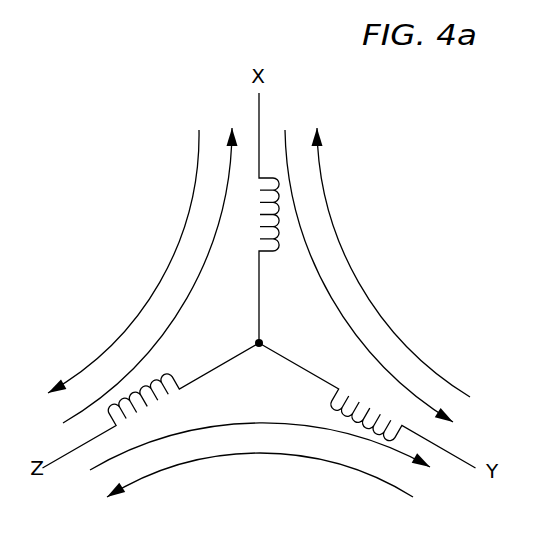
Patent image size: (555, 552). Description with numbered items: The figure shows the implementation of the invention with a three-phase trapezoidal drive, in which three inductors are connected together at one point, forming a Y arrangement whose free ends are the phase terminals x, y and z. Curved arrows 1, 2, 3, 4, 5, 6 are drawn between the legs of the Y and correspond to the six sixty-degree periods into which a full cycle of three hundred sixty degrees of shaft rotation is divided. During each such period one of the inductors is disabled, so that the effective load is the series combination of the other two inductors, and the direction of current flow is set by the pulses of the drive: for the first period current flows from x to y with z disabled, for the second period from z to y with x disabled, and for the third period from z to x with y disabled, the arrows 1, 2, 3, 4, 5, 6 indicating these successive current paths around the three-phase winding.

The current flow direction arrow (phase X to phase Y) 1 is at (376, 284).
The current flow direction arrow (phase Z to phase Y) 2 is at (267, 454).
The current flow direction arrow (phase Z to phase X) 3 is at (151, 261).
The current flow direction arrow (phase Y to phase X) 4 is at (390, 248).
The current flow direction arrow (phase Y to phase Z) 5 is at (251, 481).
The current flow direction arrow (phase X to phase Z) 6 is at (114, 271).